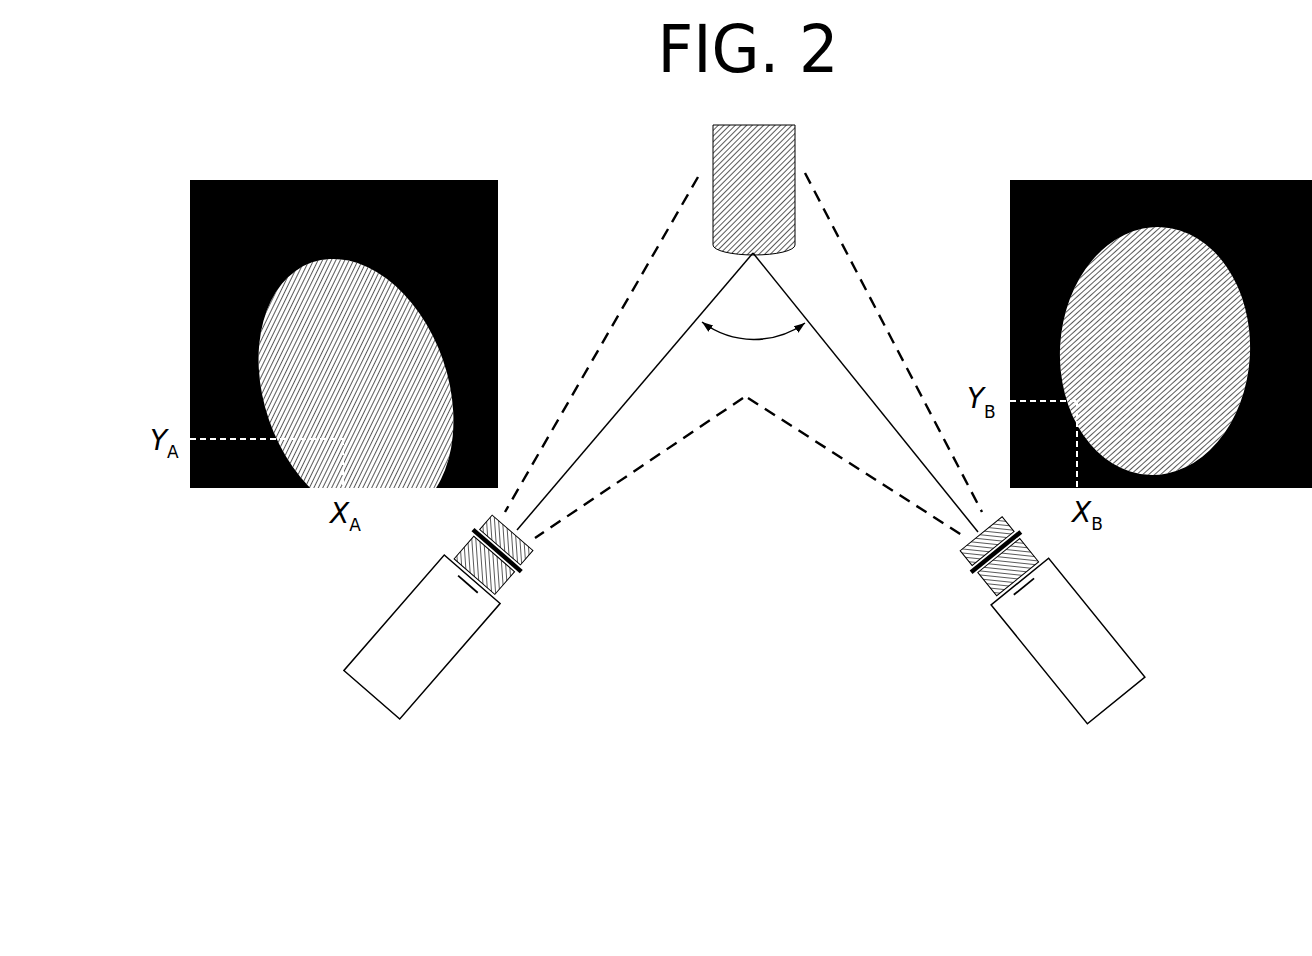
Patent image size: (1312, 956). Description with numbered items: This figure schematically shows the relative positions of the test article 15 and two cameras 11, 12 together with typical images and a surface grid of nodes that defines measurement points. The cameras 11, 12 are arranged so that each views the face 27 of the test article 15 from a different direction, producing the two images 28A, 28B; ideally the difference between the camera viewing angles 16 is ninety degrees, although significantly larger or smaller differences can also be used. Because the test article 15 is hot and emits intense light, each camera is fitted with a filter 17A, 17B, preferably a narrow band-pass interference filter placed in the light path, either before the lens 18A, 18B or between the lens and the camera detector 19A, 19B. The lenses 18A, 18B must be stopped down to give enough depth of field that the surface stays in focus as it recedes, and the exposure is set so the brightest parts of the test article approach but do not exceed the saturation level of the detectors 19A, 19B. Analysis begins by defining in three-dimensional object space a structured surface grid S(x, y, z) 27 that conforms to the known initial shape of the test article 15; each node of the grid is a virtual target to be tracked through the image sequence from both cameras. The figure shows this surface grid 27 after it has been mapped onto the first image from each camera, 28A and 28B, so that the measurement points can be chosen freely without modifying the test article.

The camera 11 is at (423, 697).
The camera 12 is at (1112, 698).
The test article 15 is at (754, 187).
The camera viewing angles 16 is at (753, 352).
The filter 17A is at (522, 575).
The filter 17B is at (965, 568).
The lens 18A is at (530, 548).
The lens 18B is at (957, 543).
The camera detector 19A is at (447, 577).
The camera detector 19B is at (1047, 577).
The surface grid S(x, y, z) 27 is at (785, 256).
The first image from camera A 28A is at (344, 346).
The first image from camera B 28B is at (1161, 316).